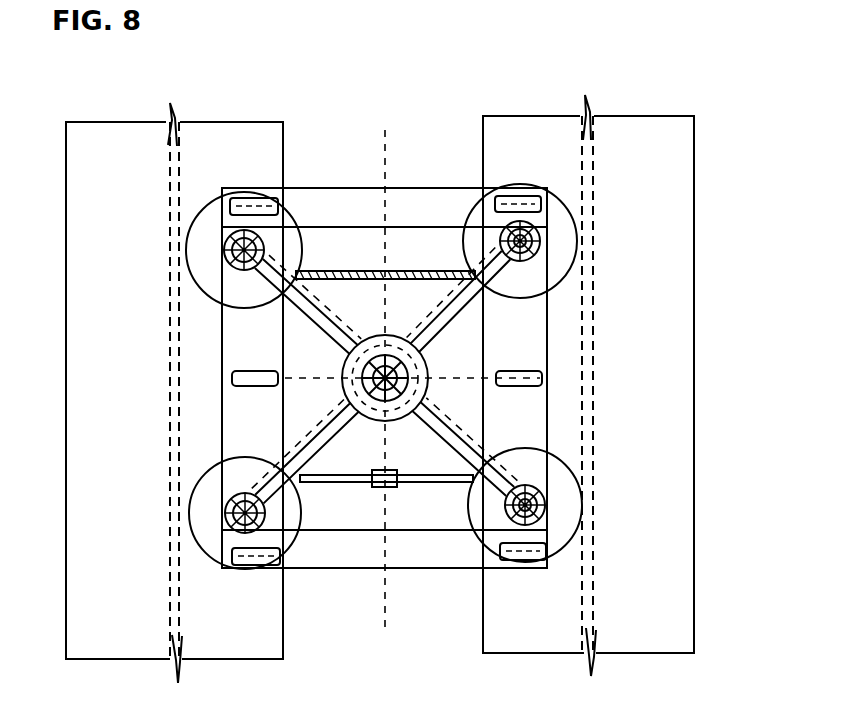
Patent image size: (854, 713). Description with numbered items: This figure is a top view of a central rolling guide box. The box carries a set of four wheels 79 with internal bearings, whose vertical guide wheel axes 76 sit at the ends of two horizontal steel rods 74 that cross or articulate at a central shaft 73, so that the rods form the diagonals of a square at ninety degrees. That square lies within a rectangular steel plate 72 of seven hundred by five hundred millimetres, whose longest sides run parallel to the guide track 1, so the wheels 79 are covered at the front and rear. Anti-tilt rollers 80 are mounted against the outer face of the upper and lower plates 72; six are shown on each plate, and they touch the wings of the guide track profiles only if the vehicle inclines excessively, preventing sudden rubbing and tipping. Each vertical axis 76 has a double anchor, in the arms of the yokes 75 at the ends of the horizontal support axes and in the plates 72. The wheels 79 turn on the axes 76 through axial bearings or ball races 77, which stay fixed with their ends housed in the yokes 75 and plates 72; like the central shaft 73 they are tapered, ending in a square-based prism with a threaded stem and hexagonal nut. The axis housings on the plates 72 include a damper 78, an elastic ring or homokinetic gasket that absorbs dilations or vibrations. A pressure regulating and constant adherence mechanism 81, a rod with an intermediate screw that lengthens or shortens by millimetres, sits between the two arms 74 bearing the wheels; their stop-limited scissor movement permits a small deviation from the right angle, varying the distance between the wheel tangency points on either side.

The guide track 1 is at (553, 115).
The rectangular steel plate 72 is at (320, 186).
The central shaft 73 is at (397, 340).
The horizontal steel rods 74 is at (452, 465).
The yokes 75 is at (483, 452).
The vertical guide wheel axes 76 is at (548, 505).
The axial bearings or ball races 77 is at (540, 250).
The damper 78 is at (535, 240).
The wheels 79 is at (565, 240).
The anti-tilt rollers 80 is at (540, 193).
The pressure regulating and constant adherence mechanism 81 is at (358, 287).